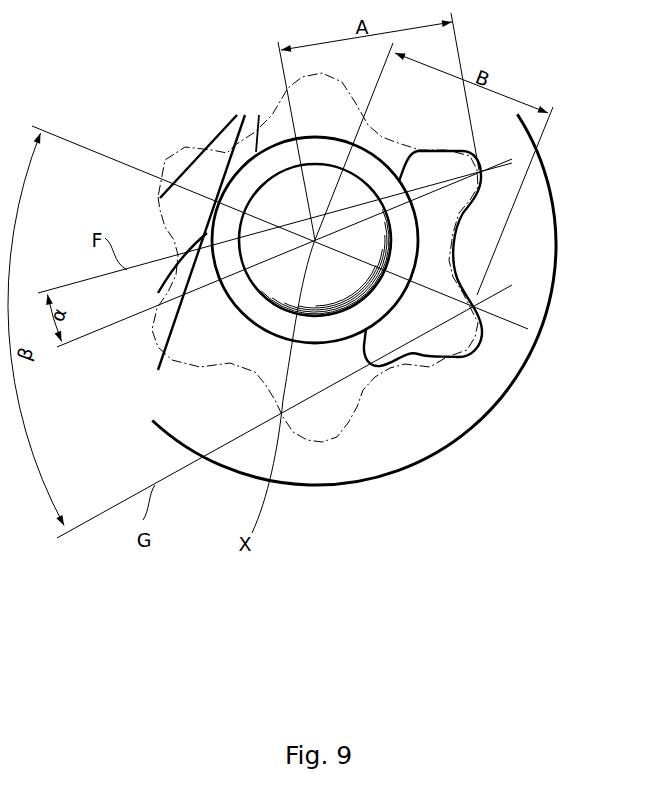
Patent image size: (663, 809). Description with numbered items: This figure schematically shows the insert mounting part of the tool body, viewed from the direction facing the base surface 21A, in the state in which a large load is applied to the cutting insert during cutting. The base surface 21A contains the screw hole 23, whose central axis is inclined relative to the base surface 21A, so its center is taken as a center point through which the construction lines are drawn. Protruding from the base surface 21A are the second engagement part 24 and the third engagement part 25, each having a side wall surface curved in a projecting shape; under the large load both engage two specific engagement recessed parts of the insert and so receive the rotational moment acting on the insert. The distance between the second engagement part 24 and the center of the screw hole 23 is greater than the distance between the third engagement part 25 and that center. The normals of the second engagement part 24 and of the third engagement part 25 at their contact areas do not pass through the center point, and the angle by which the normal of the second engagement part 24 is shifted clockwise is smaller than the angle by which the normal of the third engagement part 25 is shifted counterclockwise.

The base surface 21A is at (403, 403).
The screw hole 23 is at (331, 314).
The second engagement part 24 is at (480, 172).
The third engagement part 25 is at (477, 347).